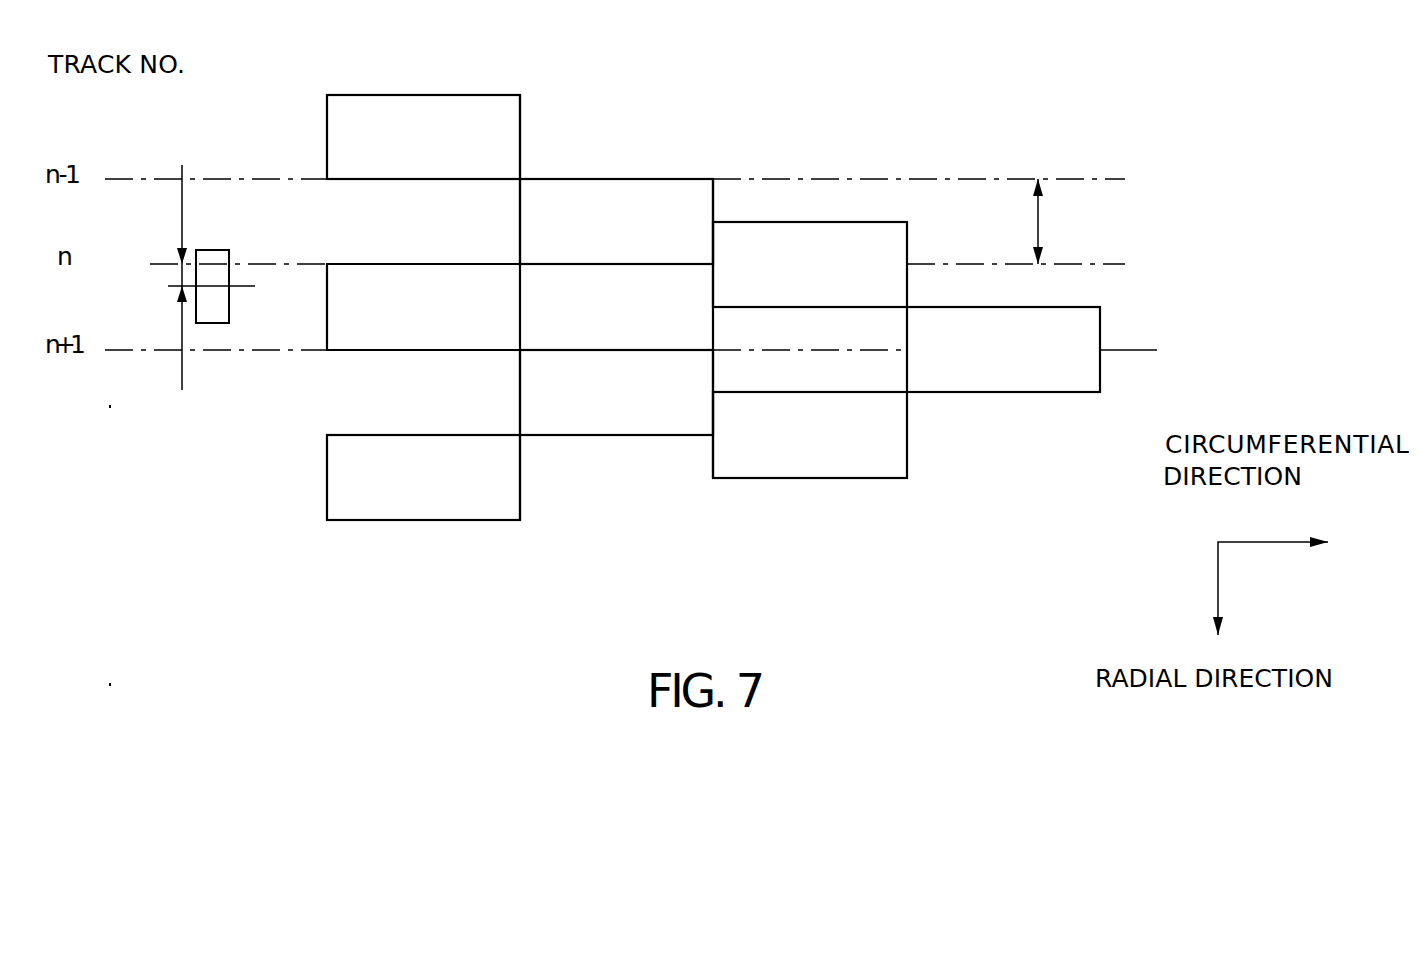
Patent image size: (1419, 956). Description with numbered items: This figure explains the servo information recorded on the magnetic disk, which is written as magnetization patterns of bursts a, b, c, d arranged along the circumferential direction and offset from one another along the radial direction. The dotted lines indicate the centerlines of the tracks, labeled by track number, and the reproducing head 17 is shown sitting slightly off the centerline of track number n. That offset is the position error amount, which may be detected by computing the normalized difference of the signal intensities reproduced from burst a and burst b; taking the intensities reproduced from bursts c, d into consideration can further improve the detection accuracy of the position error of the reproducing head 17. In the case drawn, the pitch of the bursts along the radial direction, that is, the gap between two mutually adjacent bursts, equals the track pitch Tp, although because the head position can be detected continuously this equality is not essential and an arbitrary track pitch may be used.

The reproducing head 17 is at (212, 250).
The burst a is at (423, 285).
The burst b is at (616, 285).
The burst c is at (810, 328).
The burst d is at (1003, 372).
The track pitch Tp is at (1156, 221).